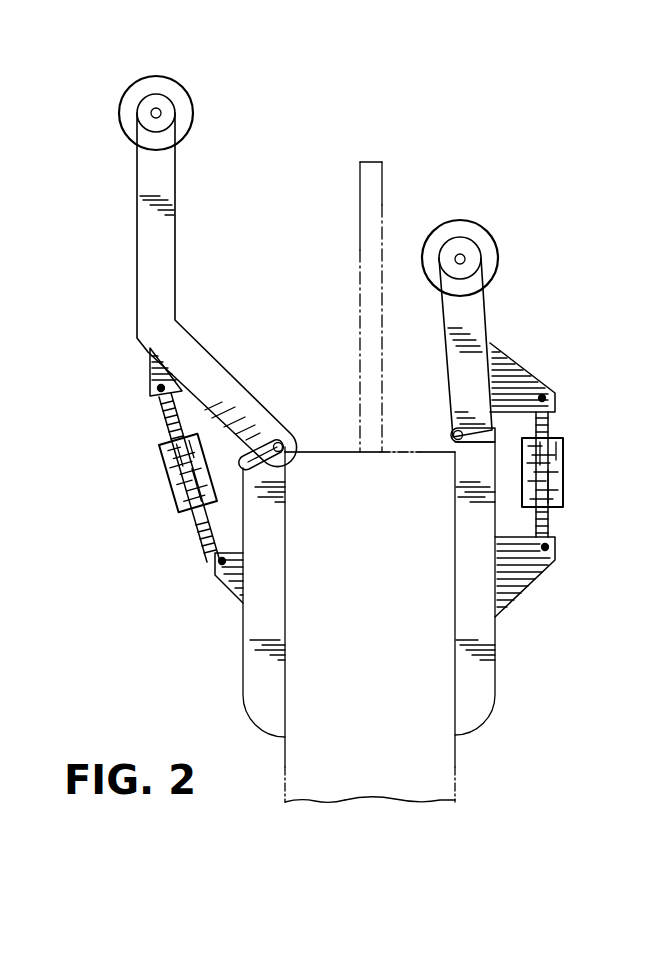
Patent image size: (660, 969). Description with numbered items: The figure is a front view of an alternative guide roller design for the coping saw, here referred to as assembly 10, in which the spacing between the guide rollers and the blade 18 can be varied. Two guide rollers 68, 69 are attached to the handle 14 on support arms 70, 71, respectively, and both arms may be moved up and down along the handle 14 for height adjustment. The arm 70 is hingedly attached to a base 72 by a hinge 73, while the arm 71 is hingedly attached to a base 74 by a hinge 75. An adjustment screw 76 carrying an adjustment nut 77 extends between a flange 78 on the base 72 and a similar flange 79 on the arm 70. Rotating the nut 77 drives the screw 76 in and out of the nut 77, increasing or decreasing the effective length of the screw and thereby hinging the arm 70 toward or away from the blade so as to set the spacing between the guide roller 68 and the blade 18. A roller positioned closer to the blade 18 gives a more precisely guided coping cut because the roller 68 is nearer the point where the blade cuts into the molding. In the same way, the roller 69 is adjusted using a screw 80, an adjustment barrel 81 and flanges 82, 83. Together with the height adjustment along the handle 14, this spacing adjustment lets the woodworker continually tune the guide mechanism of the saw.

The mast carriage assembly 10 is at (456, 752).
The handle 14 is at (391, 727).
The blade 18 is at (383, 185).
The roller 68 is at (190, 100).
The roller 69 is at (498, 248).
The support arm 70 is at (220, 368).
The support arm 71 is at (493, 322).
The base 72 is at (278, 590).
The hinge 73 is at (282, 444).
The base 74 is at (465, 588).
The hinge 75 is at (453, 437).
The adjustment screw 76 is at (200, 545).
The adjustment nut 77 is at (170, 493).
The flange 78 is at (226, 588).
The flange 79 is at (150, 378).
The screw 80 is at (552, 517).
The adjustment barrel 81 is at (566, 472).
The flange 82 is at (528, 577).
The flange 83 is at (535, 385).